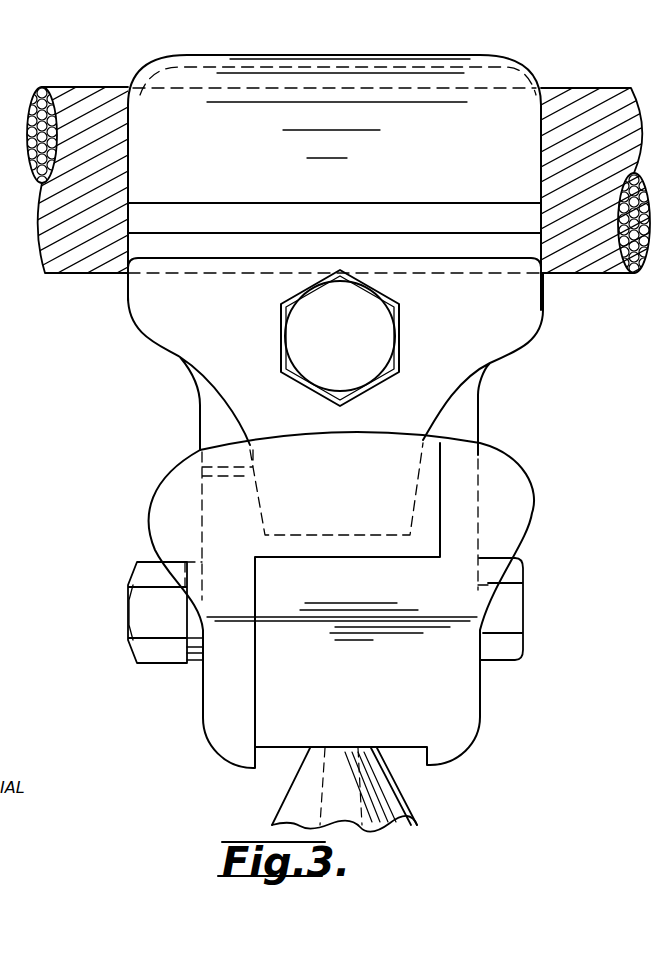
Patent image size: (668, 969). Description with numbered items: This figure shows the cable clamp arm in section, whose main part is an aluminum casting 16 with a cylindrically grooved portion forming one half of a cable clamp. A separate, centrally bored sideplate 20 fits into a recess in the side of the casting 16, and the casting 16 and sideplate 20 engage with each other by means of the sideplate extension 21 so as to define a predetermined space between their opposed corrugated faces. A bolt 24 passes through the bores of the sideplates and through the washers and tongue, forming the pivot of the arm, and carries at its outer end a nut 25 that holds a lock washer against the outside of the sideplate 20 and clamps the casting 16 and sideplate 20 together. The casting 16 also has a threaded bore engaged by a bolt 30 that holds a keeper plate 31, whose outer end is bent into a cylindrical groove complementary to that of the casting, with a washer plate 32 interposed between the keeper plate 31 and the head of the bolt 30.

The casting 16 is at (497, 390).
The sideplate 20 is at (218, 705).
The sideplate extension 21 is at (284, 448).
The bolt 24 is at (503, 612).
The nut 25 is at (157, 610).
The bolt 30 is at (370, 338).
The keeper plate 31 is at (505, 108).
The washer plate 32 is at (517, 312).